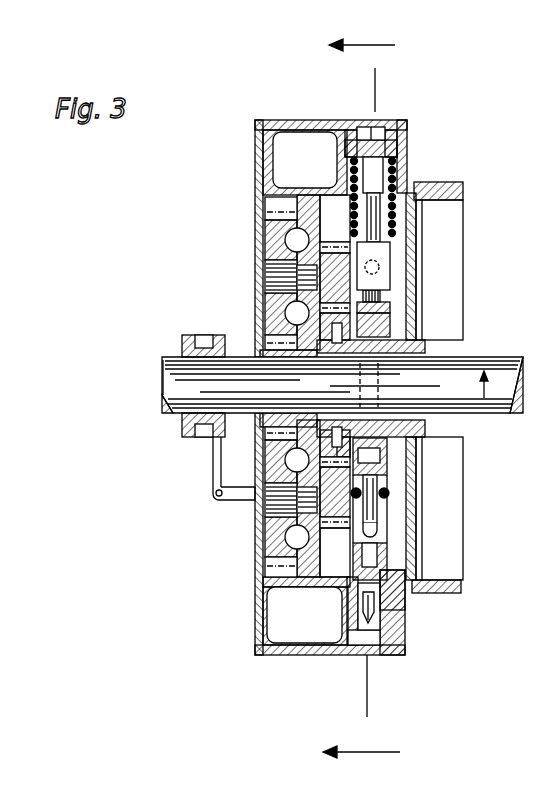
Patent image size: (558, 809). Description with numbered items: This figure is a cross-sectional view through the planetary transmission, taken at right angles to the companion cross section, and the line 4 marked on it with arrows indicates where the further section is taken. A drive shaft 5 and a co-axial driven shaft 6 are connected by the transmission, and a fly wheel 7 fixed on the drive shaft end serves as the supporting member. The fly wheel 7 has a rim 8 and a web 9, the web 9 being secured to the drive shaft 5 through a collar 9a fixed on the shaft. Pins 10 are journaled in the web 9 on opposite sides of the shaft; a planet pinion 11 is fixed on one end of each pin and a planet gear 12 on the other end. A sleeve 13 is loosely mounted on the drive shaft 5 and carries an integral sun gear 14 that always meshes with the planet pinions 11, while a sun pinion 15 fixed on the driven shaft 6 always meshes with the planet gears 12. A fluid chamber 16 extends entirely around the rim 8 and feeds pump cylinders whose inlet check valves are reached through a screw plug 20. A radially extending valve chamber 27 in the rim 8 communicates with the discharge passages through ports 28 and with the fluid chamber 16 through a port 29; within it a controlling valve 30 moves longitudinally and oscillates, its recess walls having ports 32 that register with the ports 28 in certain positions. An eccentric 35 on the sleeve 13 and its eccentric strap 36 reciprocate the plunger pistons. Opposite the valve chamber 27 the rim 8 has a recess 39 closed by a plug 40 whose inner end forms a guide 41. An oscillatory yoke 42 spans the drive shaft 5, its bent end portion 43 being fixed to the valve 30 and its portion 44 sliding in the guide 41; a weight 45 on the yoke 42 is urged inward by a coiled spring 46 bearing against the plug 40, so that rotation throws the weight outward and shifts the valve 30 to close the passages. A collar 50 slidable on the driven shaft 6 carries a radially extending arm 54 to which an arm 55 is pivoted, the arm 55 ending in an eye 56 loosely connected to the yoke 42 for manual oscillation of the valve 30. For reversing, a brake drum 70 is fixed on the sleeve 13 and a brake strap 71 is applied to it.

The section line 4 is at (361, 398).
The drive shaft 5 is at (498, 391).
The driven shaft 6 is at (162, 384).
The fly wheel 7 is at (309, 121).
The rim 8 is at (257, 150).
The web 9 is at (263, 305).
The collar 9a is at (262, 323).
The pins 10 is at (262, 262).
The planet pinion 11 is at (334, 242).
The planet gear 12 is at (265, 222).
The sleeve 13 is at (410, 446).
The sun gear 14 is at (362, 455).
The sun pinion 15 is at (465, 238).
The fluid chamber 16 is at (304, 387).
The screw plug 20 is at (371, 480).
The valve chamber 27 is at (372, 657).
The ports 28 is at (398, 625).
The port 29 is at (347, 638).
The controlling valve 30 is at (416, 594).
The ports 32 is at (355, 602).
The eccentric 35 is at (392, 334).
The eccentric strap 36 is at (392, 312).
The recess 39 is at (402, 158).
The plug 40 is at (407, 126).
The guide 41 is at (410, 172).
The oscillatory yoke 42 is at (386, 552).
The radially extending portion 43 is at (380, 519).
The radially extending portion 44 is at (374, 216).
The weight 45 is at (383, 263).
The coiled spring 46 is at (393, 220).
The collar 50 is at (183, 425).
The radially extending arm 54 is at (213, 466).
The arm 55 is at (237, 495).
The eye 56 is at (385, 495).
The brake drum 70 is at (455, 346).
The brake strap 71 is at (452, 187).